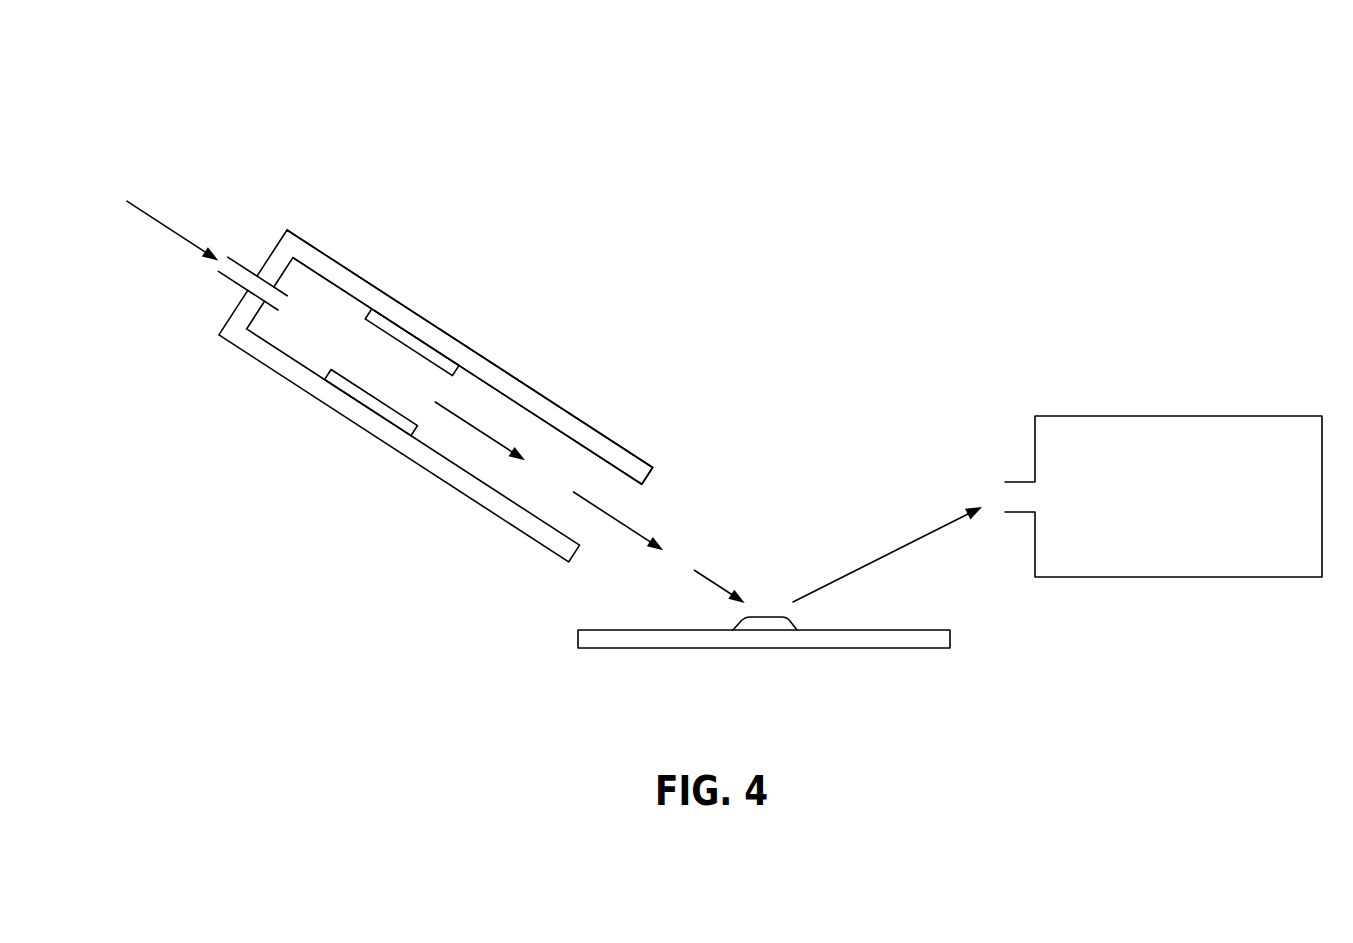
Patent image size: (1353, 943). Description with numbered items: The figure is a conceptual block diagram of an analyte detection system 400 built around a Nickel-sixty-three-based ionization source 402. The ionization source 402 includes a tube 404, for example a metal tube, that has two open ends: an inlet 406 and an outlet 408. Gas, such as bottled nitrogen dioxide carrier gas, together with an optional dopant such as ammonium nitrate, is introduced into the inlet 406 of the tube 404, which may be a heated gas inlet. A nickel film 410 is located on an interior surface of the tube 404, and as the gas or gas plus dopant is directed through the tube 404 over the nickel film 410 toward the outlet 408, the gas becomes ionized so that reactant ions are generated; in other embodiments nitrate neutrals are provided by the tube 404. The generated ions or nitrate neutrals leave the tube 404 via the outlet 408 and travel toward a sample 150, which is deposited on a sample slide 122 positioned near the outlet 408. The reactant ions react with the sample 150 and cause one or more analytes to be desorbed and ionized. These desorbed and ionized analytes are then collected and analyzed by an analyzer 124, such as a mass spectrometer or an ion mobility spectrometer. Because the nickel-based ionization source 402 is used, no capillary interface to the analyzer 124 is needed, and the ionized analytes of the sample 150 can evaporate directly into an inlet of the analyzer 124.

The analyte detection system 400 is at (204, 71).
The ionization source 402 is at (528, 362).
The tube 404 is at (595, 402).
The inlet 406 is at (243, 277).
The outlet 408 is at (620, 497).
The Ni63 film 410 is at (370, 312).
The sample 150 is at (769, 603).
The sample slide 122 is at (867, 648).
The analyzer 124 is at (1178, 578).